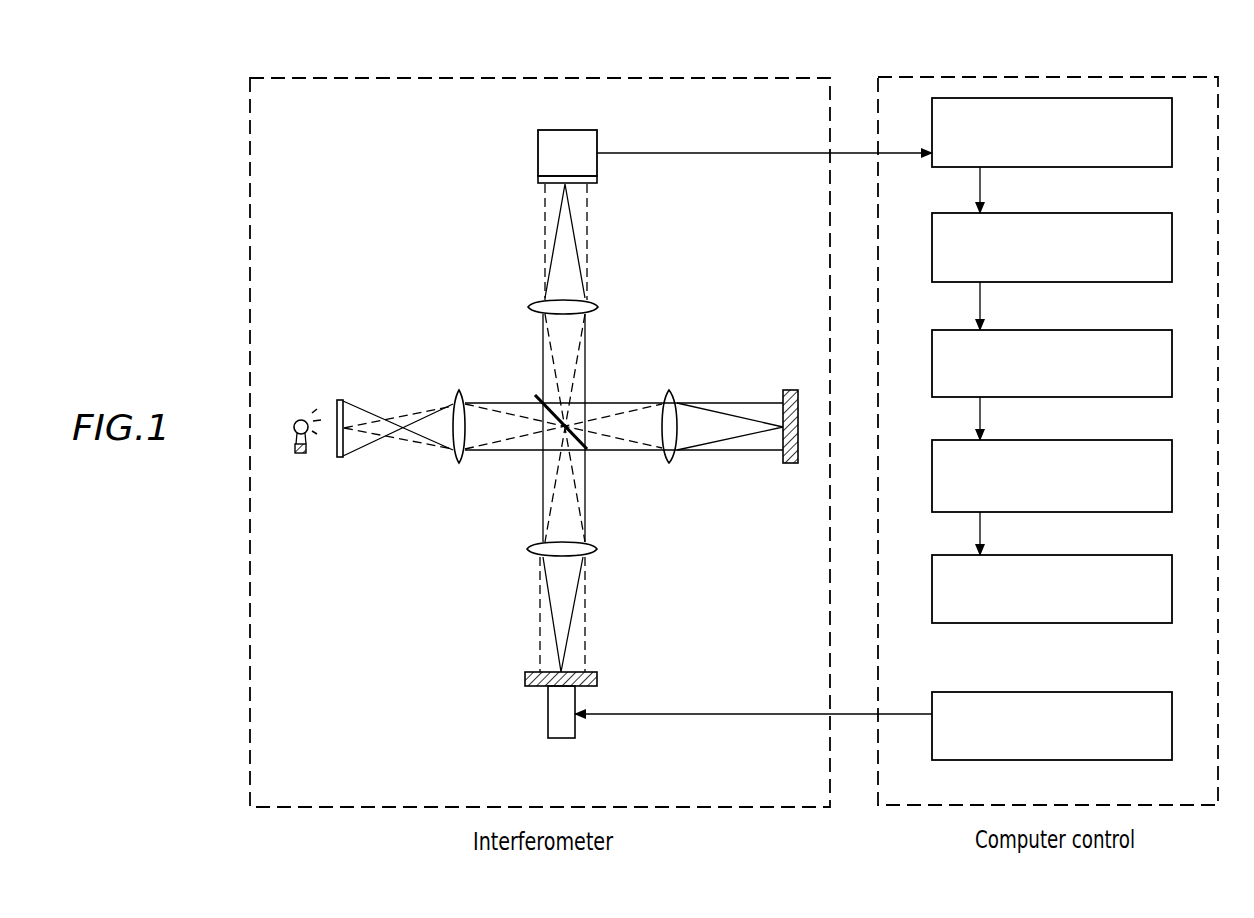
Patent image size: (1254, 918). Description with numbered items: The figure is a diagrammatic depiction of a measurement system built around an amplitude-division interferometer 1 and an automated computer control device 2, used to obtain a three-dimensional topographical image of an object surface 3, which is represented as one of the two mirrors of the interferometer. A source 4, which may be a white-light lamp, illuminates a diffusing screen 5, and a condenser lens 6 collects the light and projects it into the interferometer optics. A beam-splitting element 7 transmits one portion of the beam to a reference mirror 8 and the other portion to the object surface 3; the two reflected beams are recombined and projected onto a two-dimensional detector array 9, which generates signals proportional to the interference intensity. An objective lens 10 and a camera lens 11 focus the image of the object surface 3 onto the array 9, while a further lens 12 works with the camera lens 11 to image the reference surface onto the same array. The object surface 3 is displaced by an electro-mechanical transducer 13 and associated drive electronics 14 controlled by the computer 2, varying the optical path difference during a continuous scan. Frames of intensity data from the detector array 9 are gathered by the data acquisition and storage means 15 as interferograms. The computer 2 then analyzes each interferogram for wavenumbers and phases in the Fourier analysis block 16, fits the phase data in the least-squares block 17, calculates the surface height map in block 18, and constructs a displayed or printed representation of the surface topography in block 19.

The amplitude-division interferometer 1 is at (387, 76).
The automated computer control device 2 is at (1013, 75).
The object surface 3 is at (597, 676).
The source 4 is at (298, 413).
The diffusing screen 5 is at (343, 398).
The condenser lens 6 is at (457, 389).
The beam-splitting element 7 is at (587, 451).
The reference mirror 8 is at (789, 465).
The two-dimensional detector array 9 is at (597, 176).
The objective lens 10 is at (597, 548).
The camera lens 11 is at (598, 300).
The lens 12 is at (672, 390).
The electro-mechanical transducer 13 is at (548, 718).
The drive electronics 14 is at (1172, 722).
The electronic data acquisition and storage means 15 is at (1172, 128).
The Fourier analysis block 16 is at (1172, 243).
The least-squares fit block 17 is at (1172, 352).
The surface height calculation block 18 is at (1172, 468).
The surface topography display block 19 is at (1172, 585).